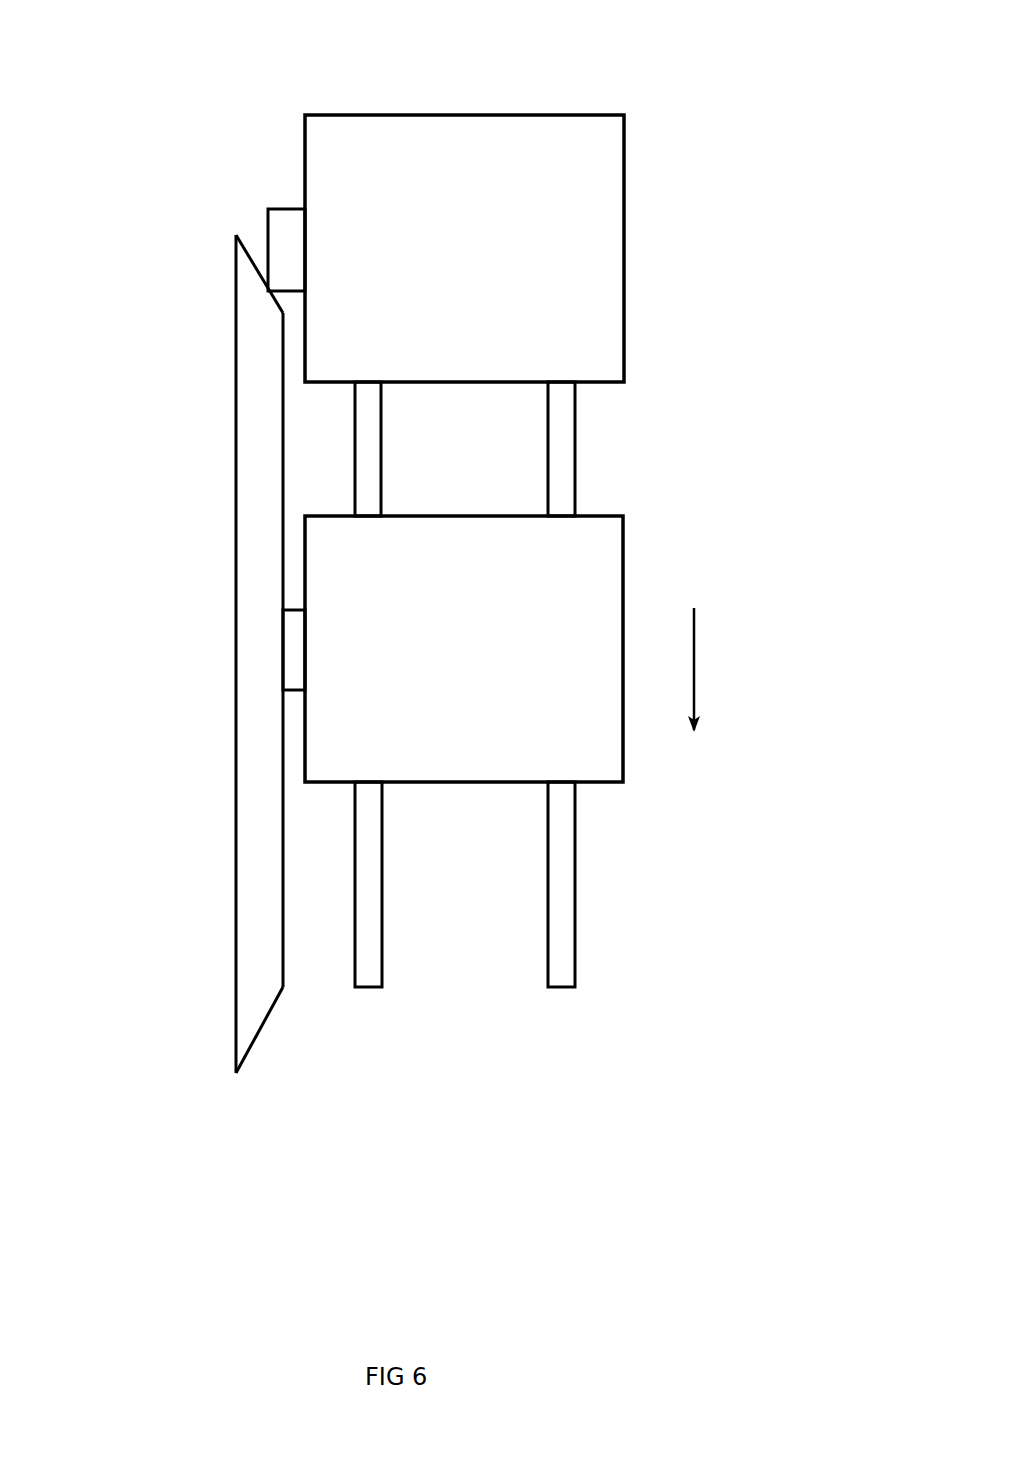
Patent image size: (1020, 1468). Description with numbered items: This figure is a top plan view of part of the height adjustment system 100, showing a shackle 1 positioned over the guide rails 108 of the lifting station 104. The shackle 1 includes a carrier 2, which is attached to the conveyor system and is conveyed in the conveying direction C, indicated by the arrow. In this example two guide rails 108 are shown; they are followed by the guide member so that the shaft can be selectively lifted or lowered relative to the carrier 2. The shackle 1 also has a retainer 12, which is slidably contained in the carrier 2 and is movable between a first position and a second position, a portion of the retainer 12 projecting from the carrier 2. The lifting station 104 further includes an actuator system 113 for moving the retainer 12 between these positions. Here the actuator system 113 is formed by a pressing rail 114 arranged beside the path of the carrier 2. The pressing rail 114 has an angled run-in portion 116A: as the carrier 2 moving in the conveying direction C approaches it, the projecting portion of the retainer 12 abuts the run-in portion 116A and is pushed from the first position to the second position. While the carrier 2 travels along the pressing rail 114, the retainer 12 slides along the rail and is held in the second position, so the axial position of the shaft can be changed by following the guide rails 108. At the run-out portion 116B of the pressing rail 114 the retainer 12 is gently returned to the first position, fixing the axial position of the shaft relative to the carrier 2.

The height adjustment system 100 is at (590, 63).
The carrier 2 is at (453, 110).
The shackle 1 is at (622, 511).
The guide rails 108 is at (579, 435).
The lifting station 104 is at (527, 1031).
The retainer 12 is at (292, 205).
The actuator system 113 is at (198, 446).
The pressing rail 114 is at (234, 915).
The run-in portion 116A is at (256, 260).
The run-out portion 116B is at (257, 1046).
The conveying direction C is at (699, 700).